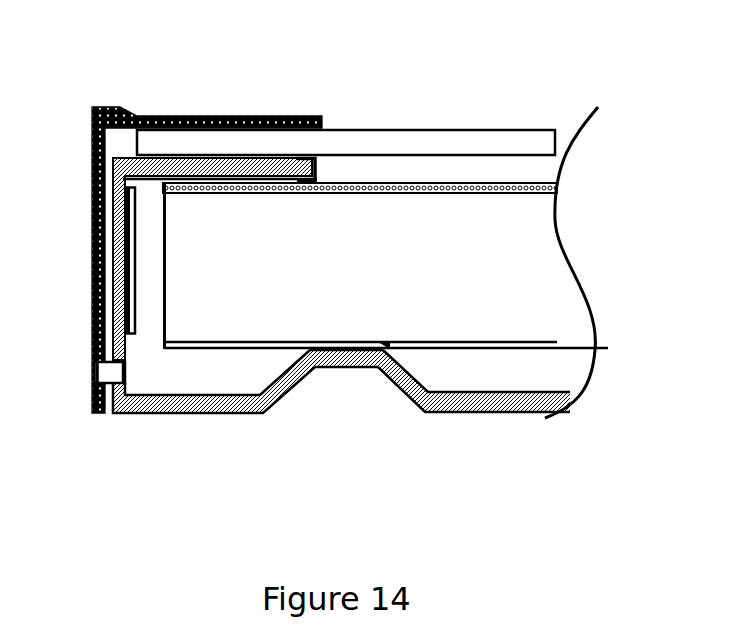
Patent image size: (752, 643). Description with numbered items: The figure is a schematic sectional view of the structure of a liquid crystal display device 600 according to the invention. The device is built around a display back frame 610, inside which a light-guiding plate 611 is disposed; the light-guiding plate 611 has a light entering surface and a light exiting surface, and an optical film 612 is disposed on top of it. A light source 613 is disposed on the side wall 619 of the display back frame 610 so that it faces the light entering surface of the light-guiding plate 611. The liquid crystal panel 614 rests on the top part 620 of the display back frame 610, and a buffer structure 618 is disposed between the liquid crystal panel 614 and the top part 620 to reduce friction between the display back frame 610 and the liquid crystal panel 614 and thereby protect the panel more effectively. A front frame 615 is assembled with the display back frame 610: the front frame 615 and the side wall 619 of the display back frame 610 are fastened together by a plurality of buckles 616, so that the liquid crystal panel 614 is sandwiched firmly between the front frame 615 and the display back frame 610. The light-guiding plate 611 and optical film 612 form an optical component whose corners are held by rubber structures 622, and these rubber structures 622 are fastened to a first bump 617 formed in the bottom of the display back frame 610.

The liquid crystal display device 600 is at (372, 41).
The display back frame 610 is at (224, 424).
The light-guiding plate 611 is at (543, 270).
The optical film 612 is at (540, 184).
The light source 613 is at (128, 338).
The liquid crystal panel 614 is at (384, 142).
The front frame 615 is at (92, 190).
The buckle 616 is at (93, 371).
The first bump 617 is at (345, 378).
The buffer structure 618 is at (320, 167).
The side wall 619 is at (127, 345).
The top part 620 is at (212, 178).
The rubber structure 622 is at (386, 346).